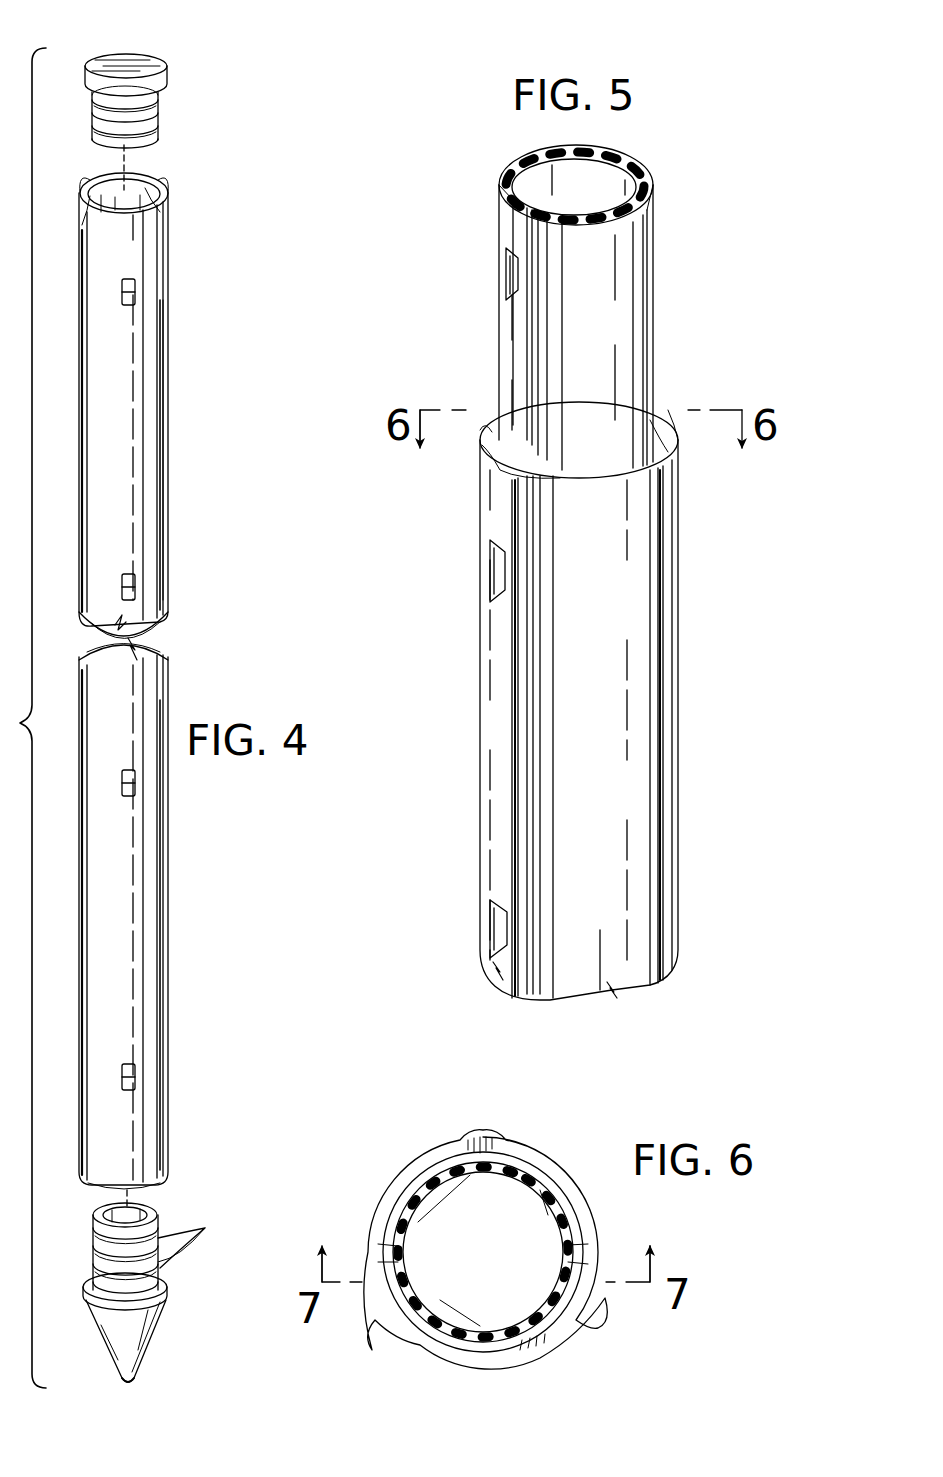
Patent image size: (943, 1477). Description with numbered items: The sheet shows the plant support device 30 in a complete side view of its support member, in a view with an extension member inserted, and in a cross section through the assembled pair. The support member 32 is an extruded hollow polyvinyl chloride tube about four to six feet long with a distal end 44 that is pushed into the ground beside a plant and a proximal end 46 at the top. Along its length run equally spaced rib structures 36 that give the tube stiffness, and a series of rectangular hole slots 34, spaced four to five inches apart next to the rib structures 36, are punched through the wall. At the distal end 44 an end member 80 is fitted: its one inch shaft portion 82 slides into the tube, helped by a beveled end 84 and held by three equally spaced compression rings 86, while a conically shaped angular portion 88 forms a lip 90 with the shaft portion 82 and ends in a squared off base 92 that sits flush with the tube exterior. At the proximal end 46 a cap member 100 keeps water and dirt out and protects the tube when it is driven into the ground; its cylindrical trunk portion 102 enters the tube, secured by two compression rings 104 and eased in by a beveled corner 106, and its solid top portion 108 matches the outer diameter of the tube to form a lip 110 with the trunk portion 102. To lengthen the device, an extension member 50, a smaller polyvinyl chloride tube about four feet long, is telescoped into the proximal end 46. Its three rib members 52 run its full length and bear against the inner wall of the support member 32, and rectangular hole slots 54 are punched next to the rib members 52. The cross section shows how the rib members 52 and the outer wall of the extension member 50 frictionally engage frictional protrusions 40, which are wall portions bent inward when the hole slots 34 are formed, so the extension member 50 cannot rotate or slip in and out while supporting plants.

In FIG. 4, the plant support device 30 is at (195, 256).
In FIG. 4, the support member 32 is at (172, 428).
In FIG. 5, the support member 32 is at (640, 664).
In FIG. 6, the support member 32 is at (418, 1148).
In FIG. 4, the hole slots 34 is at (135, 291).
In FIG. 5, the hole slots 34 is at (492, 571).
In FIG. 4, the rib structure 36 is at (128, 178).
In FIG. 5, the rib structure 36 is at (672, 745).
In FIG. 6, the rib structure 36 is at (494, 1130).
In FIG. 6, the frictional protrusions 40 is at (382, 1255).
In FIG. 4, the distal end 44 is at (122, 1175).
In FIG. 4, the proximal end 46 is at (125, 222).
In FIG. 5, the proximal end 46 is at (640, 500).
In FIG. 5, the extension member 50 is at (620, 285).
In FIG. 6, the extension member 50 is at (554, 1186).
In FIG. 5, the rib members 52 is at (542, 145).
In FIG. 6, the rib members 52 is at (497, 1152).
In FIG. 5, the hole slots 54 is at (513, 268).
In FIG. 4, the end member 80 is at (162, 1322).
In FIG. 4, the shaft portion 82 is at (100, 1240).
In FIG. 4, the beveled end 84 is at (152, 1208).
In FIG. 4, the compression rings 86 is at (152, 1272).
In FIG. 4, the angular portion 88 is at (118, 1350).
In FIG. 4, the lip 90 is at (160, 1282).
In FIG. 4, the squared off base 92 is at (98, 1302).
In FIG. 4, the cap member 100 is at (163, 62).
In FIG. 4, the trunk portion 102 is at (98, 130).
In FIG. 4, the compression rings 104 is at (160, 126).
In FIG. 4, the beveled corner 106 is at (150, 146).
In FIG. 4, the top portion 108 is at (165, 78).
In FIG. 4, the lip 110 is at (93, 117).